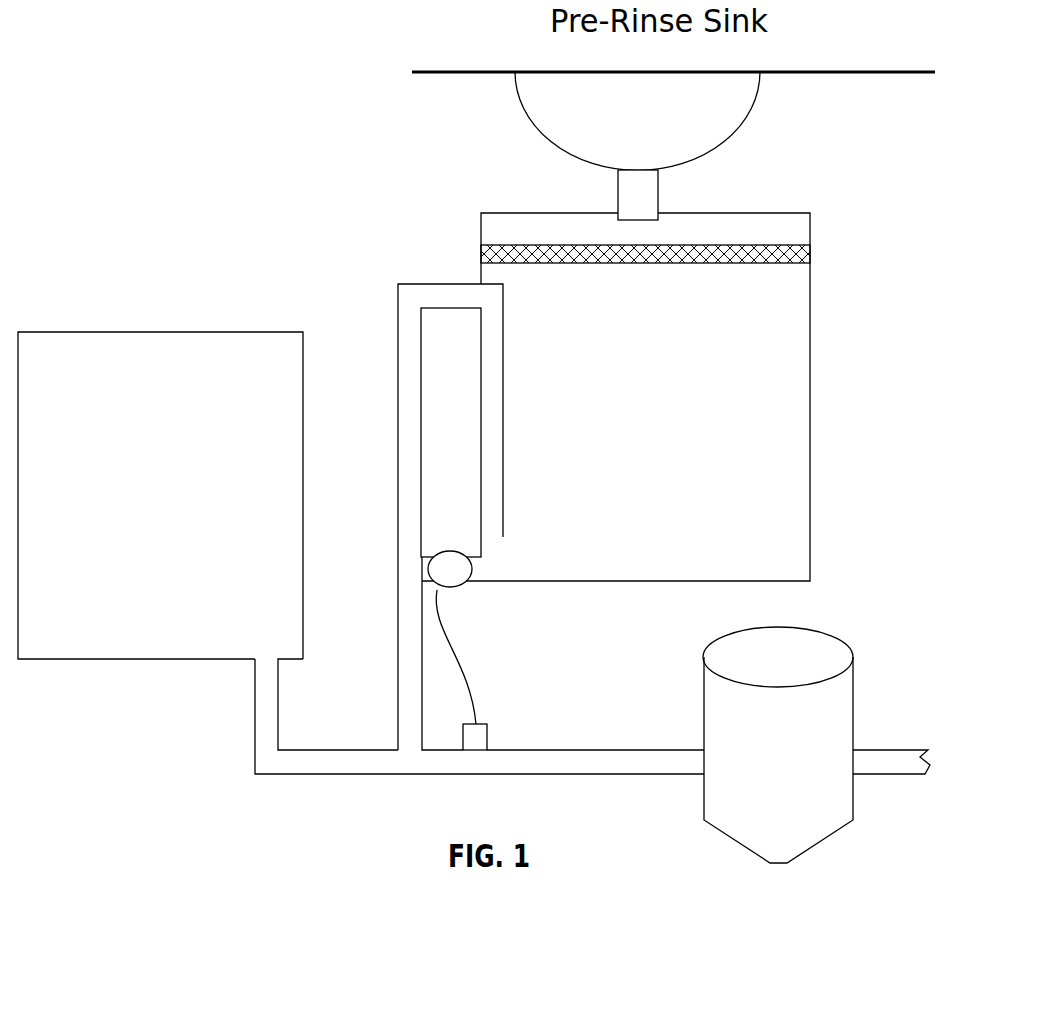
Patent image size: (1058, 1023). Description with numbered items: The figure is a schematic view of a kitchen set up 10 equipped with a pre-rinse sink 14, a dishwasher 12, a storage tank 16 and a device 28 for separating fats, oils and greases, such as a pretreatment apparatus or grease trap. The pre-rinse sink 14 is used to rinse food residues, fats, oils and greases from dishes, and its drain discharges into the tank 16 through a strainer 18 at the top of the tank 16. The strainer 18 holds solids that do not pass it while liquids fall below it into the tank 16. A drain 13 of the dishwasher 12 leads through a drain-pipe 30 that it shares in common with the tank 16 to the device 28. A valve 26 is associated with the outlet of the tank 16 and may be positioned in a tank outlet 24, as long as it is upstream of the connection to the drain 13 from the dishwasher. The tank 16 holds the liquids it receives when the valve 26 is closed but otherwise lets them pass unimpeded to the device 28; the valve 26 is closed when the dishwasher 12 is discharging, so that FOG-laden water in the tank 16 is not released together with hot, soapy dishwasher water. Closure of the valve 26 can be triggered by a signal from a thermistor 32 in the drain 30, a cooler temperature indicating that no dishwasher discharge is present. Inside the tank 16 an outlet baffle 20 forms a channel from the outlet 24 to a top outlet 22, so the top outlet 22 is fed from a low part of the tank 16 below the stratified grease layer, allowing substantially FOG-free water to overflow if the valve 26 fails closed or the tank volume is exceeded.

The dishwashing system 10 is at (145, 198).
The dishwasher 12 is at (179, 533).
The drain 13 is at (272, 718).
The pre-rinse sink 14 is at (740, 92).
The storage tank 16 is at (623, 410).
The strainer 18 is at (810, 248).
The outlet baffle 20 is at (503, 375).
The top outlet 22 is at (401, 358).
The tank outlet 24 is at (478, 570).
The valve 26 is at (402, 695).
The device for separating FOG 28 is at (757, 780).
The drain-pipe 30 is at (650, 757).
The thermistor 32 is at (477, 737).